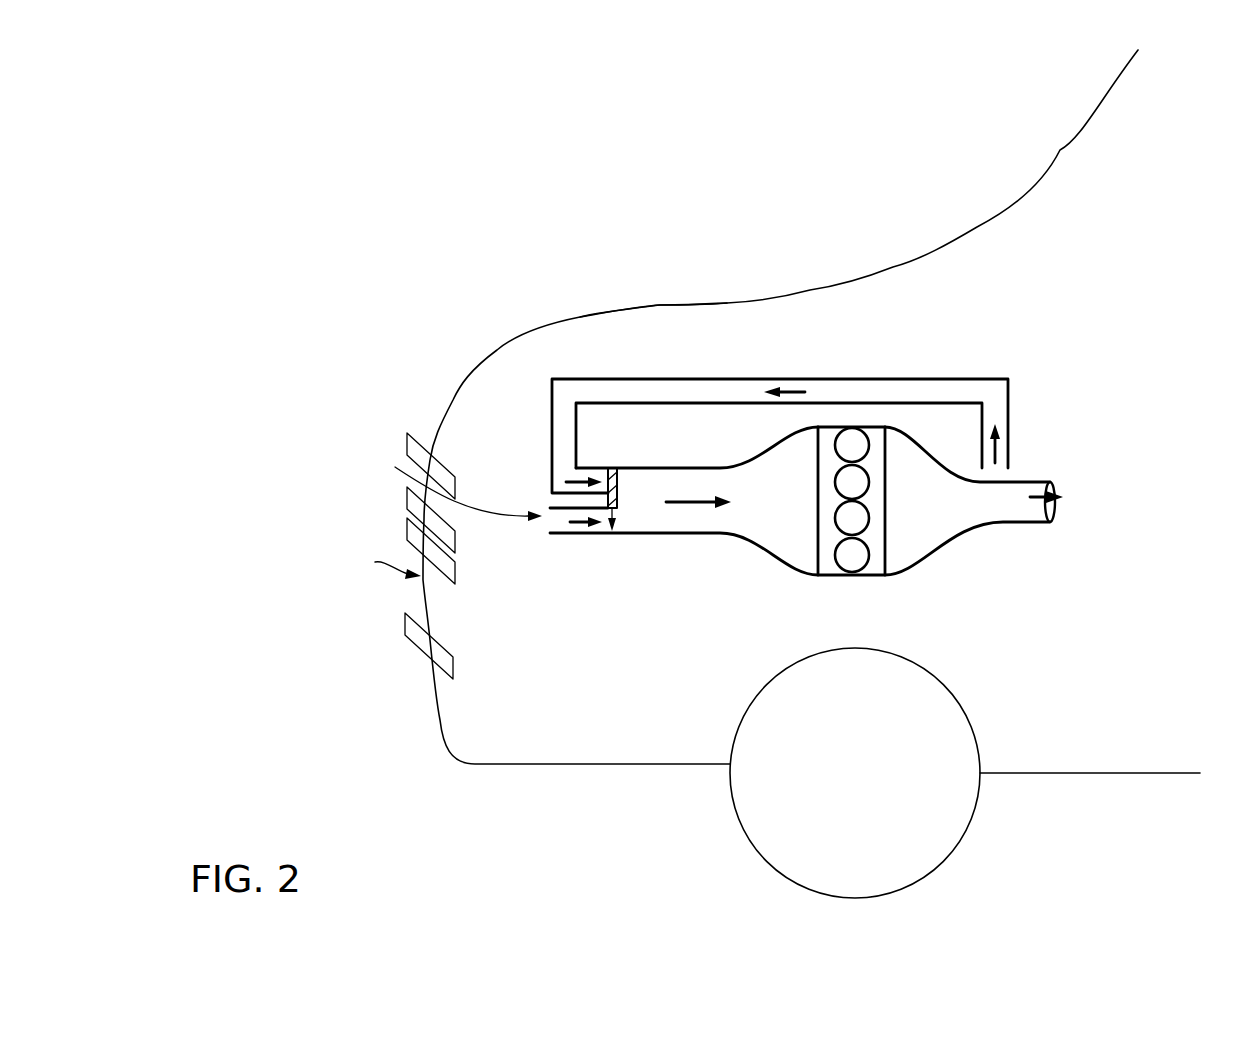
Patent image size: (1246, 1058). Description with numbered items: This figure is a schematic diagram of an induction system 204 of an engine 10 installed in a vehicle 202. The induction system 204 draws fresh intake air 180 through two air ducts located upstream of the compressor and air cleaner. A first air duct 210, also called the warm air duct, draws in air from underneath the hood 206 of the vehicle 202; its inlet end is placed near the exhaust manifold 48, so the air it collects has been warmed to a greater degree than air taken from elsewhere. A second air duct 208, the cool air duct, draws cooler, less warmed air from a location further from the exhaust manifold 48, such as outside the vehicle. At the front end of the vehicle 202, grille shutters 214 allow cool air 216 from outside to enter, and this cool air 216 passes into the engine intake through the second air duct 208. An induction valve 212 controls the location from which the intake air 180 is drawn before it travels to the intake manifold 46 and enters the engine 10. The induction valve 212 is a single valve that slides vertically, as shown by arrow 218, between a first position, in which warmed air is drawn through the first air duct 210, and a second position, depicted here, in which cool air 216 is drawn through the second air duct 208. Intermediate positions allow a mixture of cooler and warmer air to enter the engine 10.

The engine 10 is at (926, 590).
The intake manifold 46 is at (784, 500).
The exhaust manifold 48 is at (974, 501).
The intake air 180 is at (688, 503).
The vehicle 202 is at (962, 205).
The induction system 204 is at (532, 450).
The hood 206 is at (660, 305).
The second air duct 208 is at (563, 535).
The first air duct 210 is at (710, 380).
The induction valve 212 is at (618, 490).
The grille shutters 214 is at (407, 440).
The cool air 216 is at (390, 463).
The arrow 218 is at (615, 518).